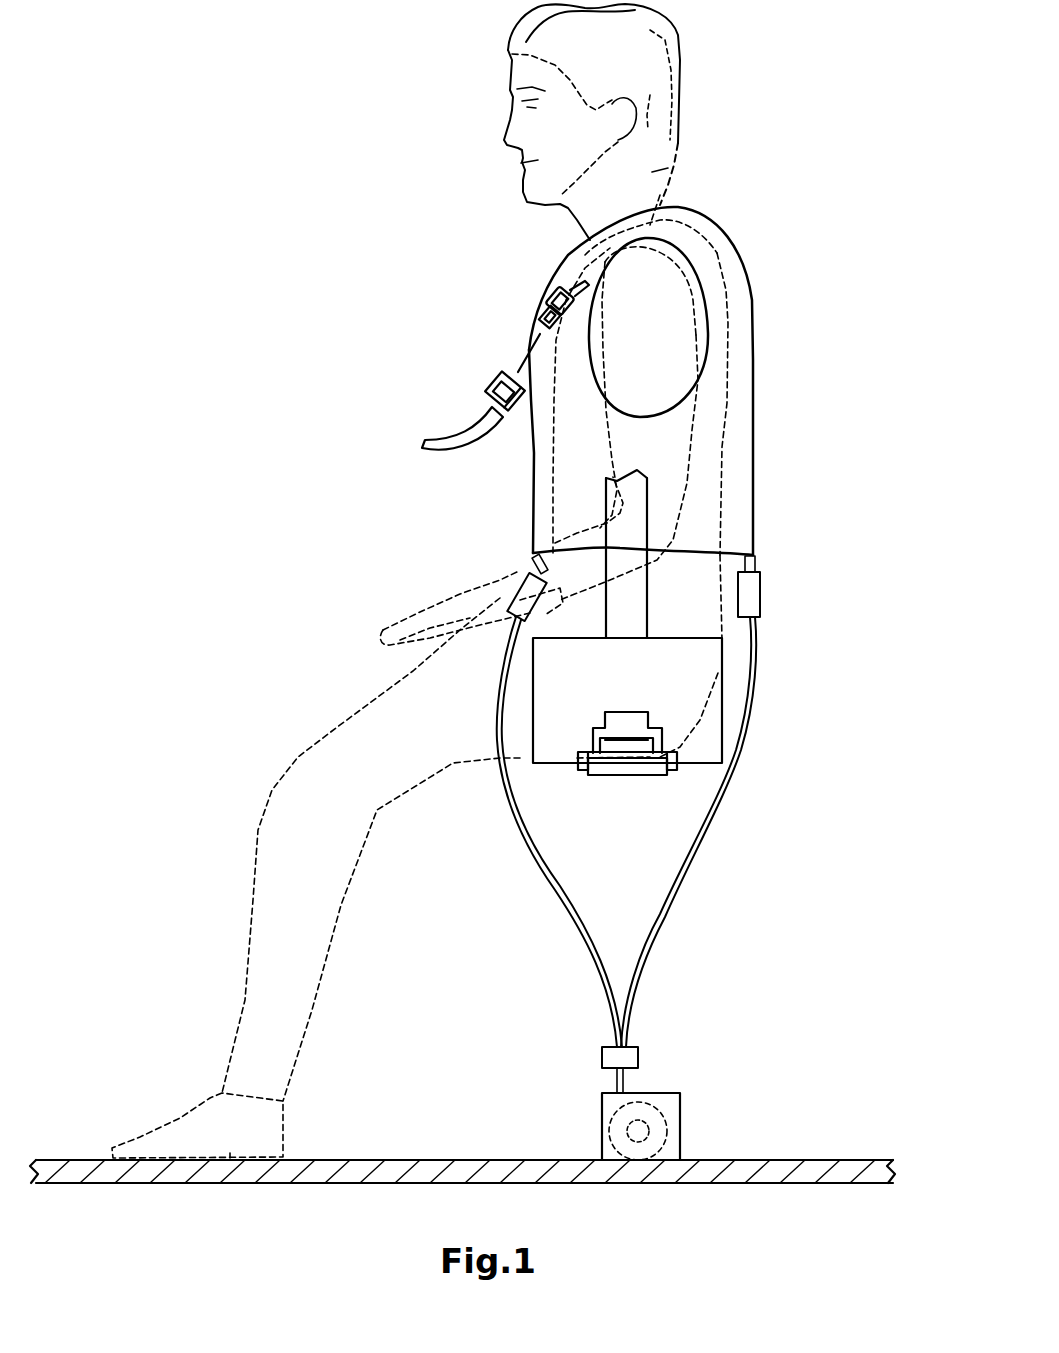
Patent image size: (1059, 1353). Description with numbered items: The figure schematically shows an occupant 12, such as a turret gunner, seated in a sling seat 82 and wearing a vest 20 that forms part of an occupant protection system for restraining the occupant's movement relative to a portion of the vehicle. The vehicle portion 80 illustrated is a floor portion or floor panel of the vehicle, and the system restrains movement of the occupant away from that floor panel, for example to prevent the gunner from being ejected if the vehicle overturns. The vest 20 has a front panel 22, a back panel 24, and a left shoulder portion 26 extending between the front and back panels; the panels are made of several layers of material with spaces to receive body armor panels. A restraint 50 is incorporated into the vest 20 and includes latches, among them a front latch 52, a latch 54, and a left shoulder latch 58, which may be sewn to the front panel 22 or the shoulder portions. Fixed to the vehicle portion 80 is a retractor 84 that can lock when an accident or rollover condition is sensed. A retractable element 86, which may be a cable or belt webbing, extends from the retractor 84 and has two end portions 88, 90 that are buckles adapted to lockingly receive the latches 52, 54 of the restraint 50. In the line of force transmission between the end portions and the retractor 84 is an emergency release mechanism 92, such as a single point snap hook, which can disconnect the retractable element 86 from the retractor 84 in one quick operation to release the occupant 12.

The occupant 12 is at (680, 50).
The vest 20 is at (754, 422).
The front panel 22 is at (545, 472).
The back panel 24 is at (740, 300).
The left shoulder portion 26 is at (657, 227).
The restraint 50 is at (737, 350).
The front latch 52 is at (537, 565).
The latch 54 is at (758, 566).
The left shoulder latch 58 is at (548, 330).
The vehicle portion 80 is at (510, 1155).
The sling seat 82 is at (683, 773).
The retractor 84 is at (672, 1108).
The retractable element 86 is at (598, 968).
The end portion 88 is at (527, 597).
The end portion 90 is at (755, 592).
The emergency release mechanism 92 is at (630, 1055).